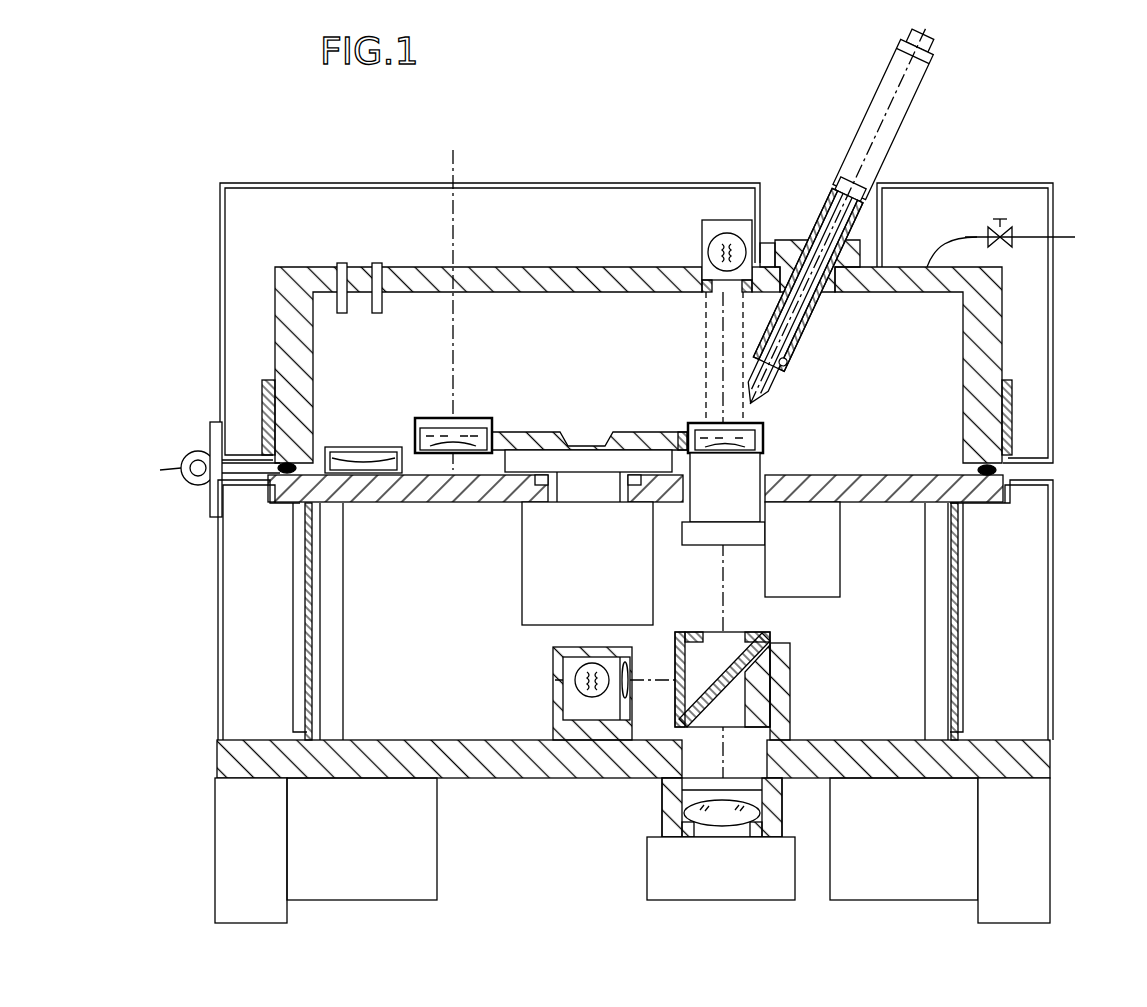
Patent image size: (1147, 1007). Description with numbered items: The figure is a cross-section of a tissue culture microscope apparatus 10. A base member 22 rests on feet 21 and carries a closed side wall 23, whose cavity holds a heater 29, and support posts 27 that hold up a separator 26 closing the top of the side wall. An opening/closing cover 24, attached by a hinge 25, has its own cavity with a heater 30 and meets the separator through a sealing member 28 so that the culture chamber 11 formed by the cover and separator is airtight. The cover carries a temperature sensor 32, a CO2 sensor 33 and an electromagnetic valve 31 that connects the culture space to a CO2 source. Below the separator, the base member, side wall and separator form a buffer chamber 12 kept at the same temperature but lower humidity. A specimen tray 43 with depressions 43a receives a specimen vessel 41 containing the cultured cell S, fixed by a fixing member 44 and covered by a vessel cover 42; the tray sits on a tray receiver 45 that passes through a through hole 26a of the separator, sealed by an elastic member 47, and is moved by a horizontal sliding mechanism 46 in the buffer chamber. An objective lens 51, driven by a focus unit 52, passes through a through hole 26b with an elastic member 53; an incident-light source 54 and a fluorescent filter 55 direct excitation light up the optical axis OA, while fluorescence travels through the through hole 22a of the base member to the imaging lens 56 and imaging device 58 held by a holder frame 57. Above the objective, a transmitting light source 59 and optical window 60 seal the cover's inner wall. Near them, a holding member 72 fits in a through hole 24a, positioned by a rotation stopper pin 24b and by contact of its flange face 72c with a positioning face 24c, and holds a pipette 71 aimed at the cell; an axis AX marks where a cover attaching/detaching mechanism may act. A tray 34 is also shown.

The tissue culture microscope apparatus 10 is at (156, 150).
The culture chamber 11 is at (1002, 325).
The buffer chamber 12 is at (915, 590).
The feet 21 is at (215, 857).
The base member 22 is at (498, 778).
The through hole 22a is at (790, 730).
The closed side wall 23 is at (218, 590).
The opening/closing cover 24 is at (220, 322).
The through hole 24a is at (838, 290).
The rotation stopper pin 24b is at (765, 245).
The positioning face 24c is at (850, 253).
The hinge 25 is at (181, 468).
The separator 26 is at (440, 502).
The through hole 26a is at (620, 502).
The through hole 26b is at (765, 520).
The support posts 27 is at (343, 632).
The sealing member 28 is at (292, 466).
The heater 29 is at (293, 618).
The heater 30 is at (268, 383).
The electromagnetic valve 31 is at (1010, 248).
The temperature sensor 32 is at (377, 265).
The CO2 sensor 33 is at (342, 265).
The tray 34 is at (365, 447).
The specimen vessel 41 is at (420, 420).
The vessel cover 42 is at (465, 420).
The specimen tray 43 is at (628, 432).
The depressions 43a is at (688, 438).
The fixing member 44 is at (510, 432).
The tray receiver 45 is at (582, 432).
The horizontal sliding mechanism 46 is at (522, 578).
The elastic member 47 is at (516, 482).
The objective lens 51 is at (762, 460).
The focus unit 52 is at (840, 575).
The elastic member 53 is at (768, 490).
The incident-light source 54 is at (553, 680).
The fluorescent filter 55 is at (683, 632).
The imaging lens 56 is at (762, 810).
The holder frame 57 is at (662, 810).
The imaging device 58 is at (795, 868).
The transmitting light source 59 is at (702, 246).
The optical window 60 is at (706, 293).
The pipette 71 is at (837, 216).
The holding member 72 is at (792, 240).
The flange face 72c is at (862, 290).
The cultured cell S is at (450, 428).
The axis AX is at (455, 158).
The optical axis OA is at (727, 618).